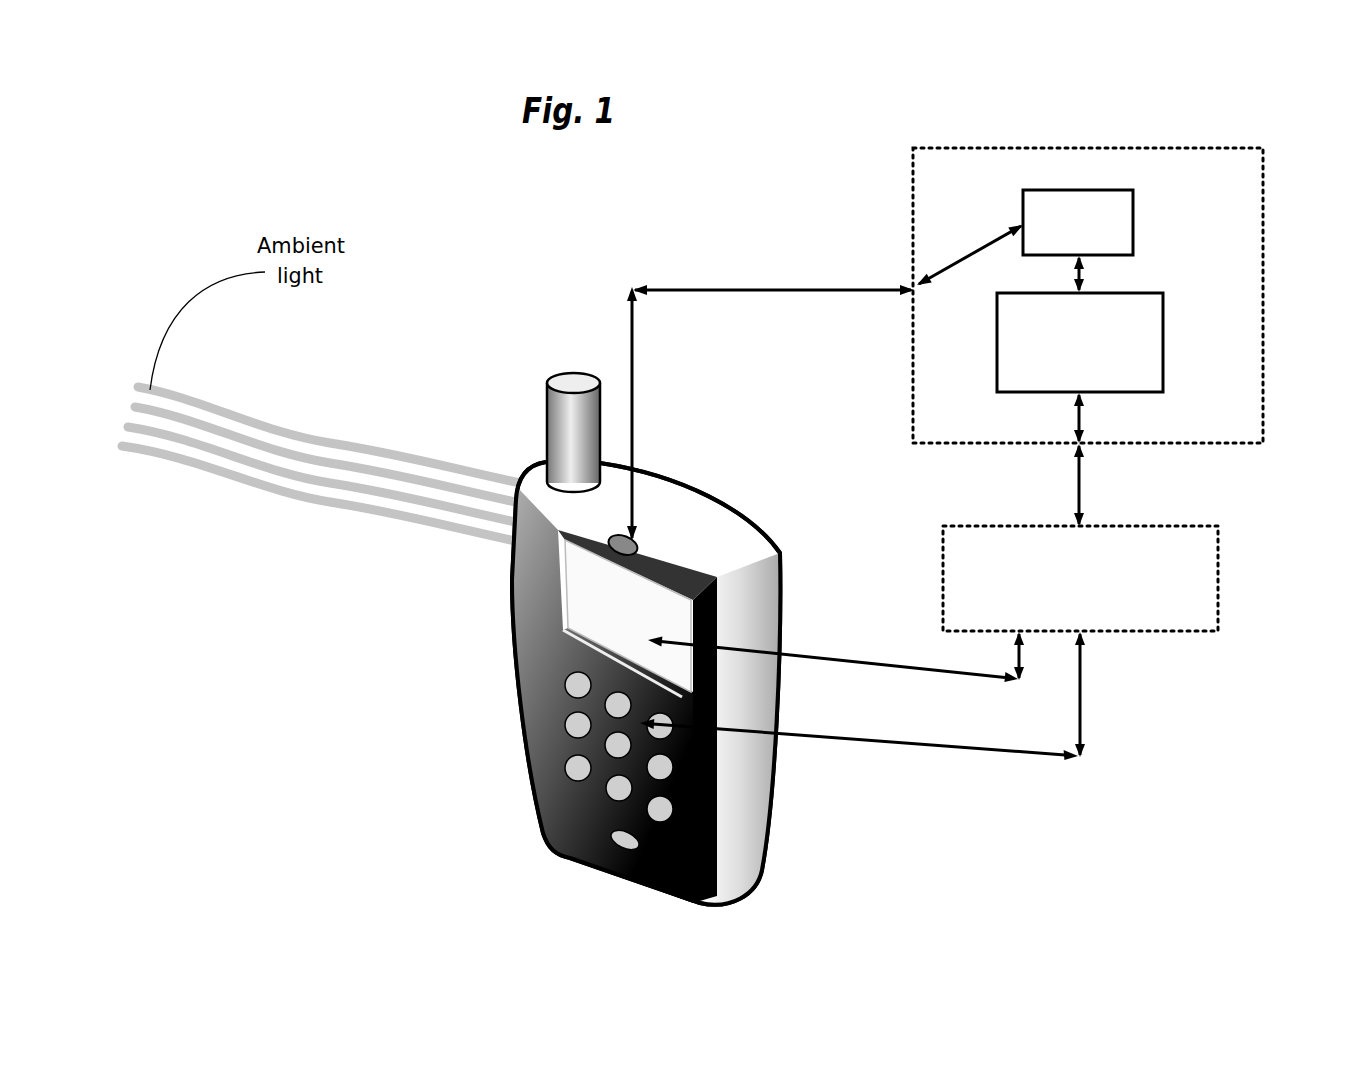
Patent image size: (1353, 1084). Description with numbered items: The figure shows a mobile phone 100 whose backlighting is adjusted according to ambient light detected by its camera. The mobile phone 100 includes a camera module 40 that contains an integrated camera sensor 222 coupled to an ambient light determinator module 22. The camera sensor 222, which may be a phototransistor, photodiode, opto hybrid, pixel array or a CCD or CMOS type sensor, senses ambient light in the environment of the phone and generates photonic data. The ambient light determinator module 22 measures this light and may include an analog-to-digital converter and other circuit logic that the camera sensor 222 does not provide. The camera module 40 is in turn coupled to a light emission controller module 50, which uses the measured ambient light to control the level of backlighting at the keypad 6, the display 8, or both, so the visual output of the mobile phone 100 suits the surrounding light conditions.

The mobile phone 100 is at (433, 249).
The camera module 40 is at (980, 150).
The camera sensor 222 is at (1138, 224).
The ambient light determinator module 22 is at (1152, 340).
The light emission controller module 50 is at (1147, 632).
The display 8 is at (672, 630).
The keypad 6 is at (575, 753).